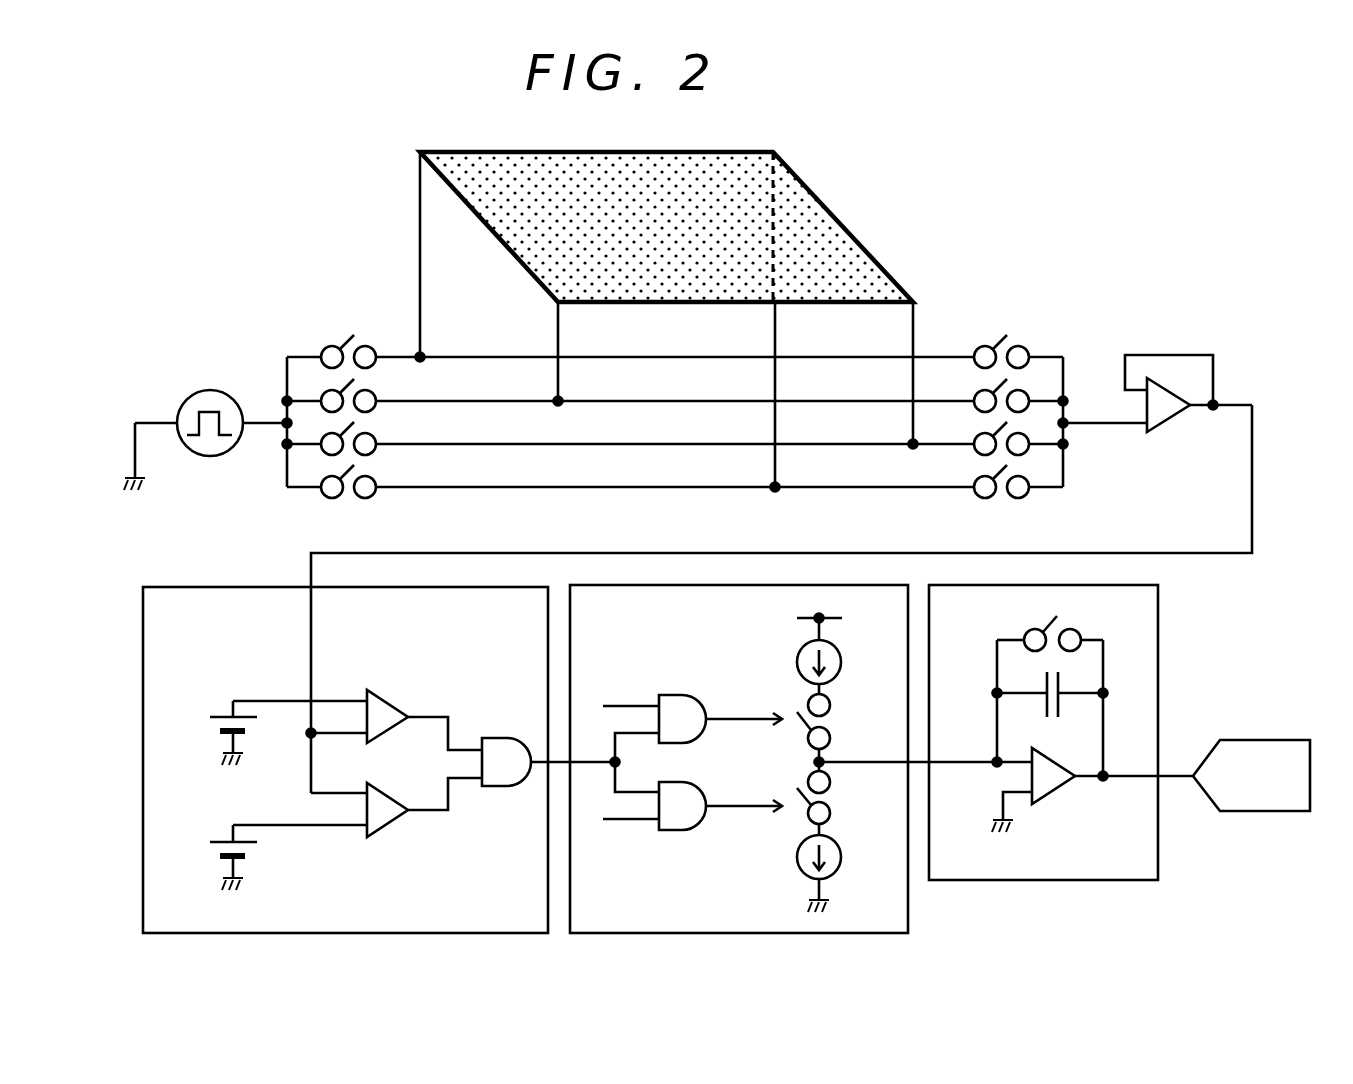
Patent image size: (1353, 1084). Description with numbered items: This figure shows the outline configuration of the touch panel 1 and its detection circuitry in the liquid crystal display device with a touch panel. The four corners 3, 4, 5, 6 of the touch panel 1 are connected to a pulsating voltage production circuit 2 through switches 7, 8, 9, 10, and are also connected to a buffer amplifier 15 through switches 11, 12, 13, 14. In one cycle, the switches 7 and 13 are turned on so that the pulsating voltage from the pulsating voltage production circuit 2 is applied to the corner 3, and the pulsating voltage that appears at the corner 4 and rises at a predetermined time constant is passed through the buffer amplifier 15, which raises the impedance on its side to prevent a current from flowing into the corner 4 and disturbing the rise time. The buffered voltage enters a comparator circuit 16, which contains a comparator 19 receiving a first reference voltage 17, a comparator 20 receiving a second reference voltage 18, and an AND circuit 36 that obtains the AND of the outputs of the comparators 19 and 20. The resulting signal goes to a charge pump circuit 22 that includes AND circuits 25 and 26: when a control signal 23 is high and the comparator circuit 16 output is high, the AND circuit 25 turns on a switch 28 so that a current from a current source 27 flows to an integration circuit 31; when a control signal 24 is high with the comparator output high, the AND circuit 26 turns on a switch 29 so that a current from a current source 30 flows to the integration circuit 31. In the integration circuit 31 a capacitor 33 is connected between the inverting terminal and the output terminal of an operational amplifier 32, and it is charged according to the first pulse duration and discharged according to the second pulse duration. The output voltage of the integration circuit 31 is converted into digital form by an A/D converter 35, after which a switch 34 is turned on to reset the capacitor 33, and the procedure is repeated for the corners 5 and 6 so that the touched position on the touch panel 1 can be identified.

The touch panel 1 is at (540, 151).
The pulsating voltage production circuit 2 is at (186, 396).
The corner 3 is at (411, 250).
The corner 4 is at (926, 367).
The corner 5 is at (790, 151).
The corner 6 is at (547, 348).
The switch 7 is at (364, 367).
The switch 8 is at (364, 411).
The switch 9 is at (364, 454).
The switch 10 is at (366, 497).
The switch 11 is at (986, 363).
The switch 12 is at (986, 407).
The switch 13 is at (986, 450).
The switch 14 is at (986, 494).
The buffer amplifier 15 is at (1170, 415).
The comparator circuit 16 is at (345, 760).
The reference voltage 17 is at (266, 843).
The reference voltage 18 is at (266, 719).
The comparator 19 is at (395, 822).
The comparator 20 is at (395, 700).
The charge pump circuit 22 is at (739, 759).
The control signal 23 is at (628, 689).
The control signal 24 is at (628, 839).
The AND circuit 25 is at (720, 701).
The AND circuit 26 is at (720, 826).
The current source 27 is at (843, 654).
The switch 28 is at (837, 732).
The switch 29 is at (837, 803).
The current source 30 is at (843, 873).
The integration circuit 31 is at (1043, 732).
The operational amplifier 32 is at (1092, 790).
The capacitor 33 is at (1050, 702).
The switch 34 is at (1063, 627).
The A/D converter 35 is at (1251, 759).
The AND circuit 36 is at (548, 747).